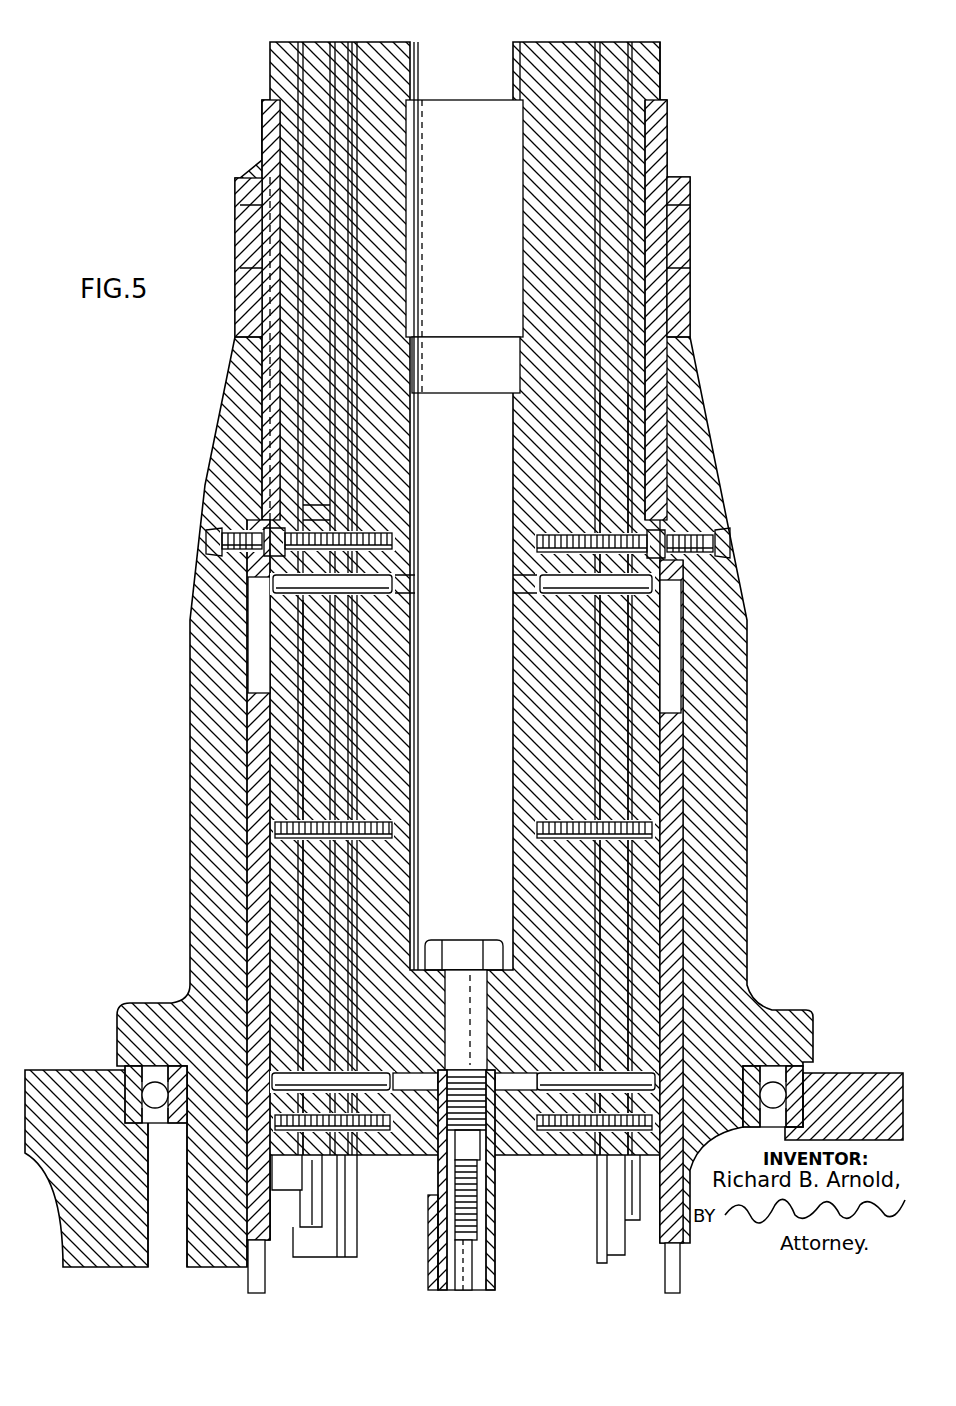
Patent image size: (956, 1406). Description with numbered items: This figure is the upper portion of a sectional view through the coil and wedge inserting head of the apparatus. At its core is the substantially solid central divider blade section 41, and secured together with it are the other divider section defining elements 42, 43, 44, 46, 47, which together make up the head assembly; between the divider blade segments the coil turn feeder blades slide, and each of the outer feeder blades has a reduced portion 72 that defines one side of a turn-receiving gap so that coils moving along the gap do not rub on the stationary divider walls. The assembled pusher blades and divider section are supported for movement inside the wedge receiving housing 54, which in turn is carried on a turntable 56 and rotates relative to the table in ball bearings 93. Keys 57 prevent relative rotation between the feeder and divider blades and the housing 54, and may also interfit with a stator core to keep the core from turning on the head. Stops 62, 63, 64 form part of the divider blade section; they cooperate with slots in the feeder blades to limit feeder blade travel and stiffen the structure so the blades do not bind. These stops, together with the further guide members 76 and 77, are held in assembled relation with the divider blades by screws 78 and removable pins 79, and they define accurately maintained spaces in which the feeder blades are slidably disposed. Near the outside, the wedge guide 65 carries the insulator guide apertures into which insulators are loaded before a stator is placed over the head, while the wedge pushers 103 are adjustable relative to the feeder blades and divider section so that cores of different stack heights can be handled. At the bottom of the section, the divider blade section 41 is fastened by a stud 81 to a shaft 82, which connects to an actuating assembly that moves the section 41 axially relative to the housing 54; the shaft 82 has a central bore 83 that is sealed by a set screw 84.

The central divider blade section 41 is at (556, 42).
The divider section defining element 42 is at (340, 42).
The divider section defining element 43 is at (313, 42).
The divider section defining element 44 is at (270, 56).
The divider section defining element 46 is at (606, 42).
The divider section defining element 47 is at (662, 58).
The wedge receiving housing 54 is at (728, 458).
The turntable 56 is at (62, 1070).
The keys 57 is at (262, 105).
The stop 62 is at (356, 522).
The stop 63 is at (340, 992).
The stop 64 is at (300, 942).
The wedge guide 65 is at (243, 175).
The reduced portion 72 is at (356, 42).
The guide member 76 is at (596, 656).
The guide member 77 is at (630, 702).
The screws 78 is at (552, 533).
The removable pins 79 is at (462, 833).
The stud 81 is at (468, 944).
The shaft 82 is at (495, 1195).
The central bore 83 is at (470, 1281).
The set screw 84 is at (478, 1216).
The ball bearings 93 is at (158, 1124).
The wedge pushers 103 is at (253, 632).